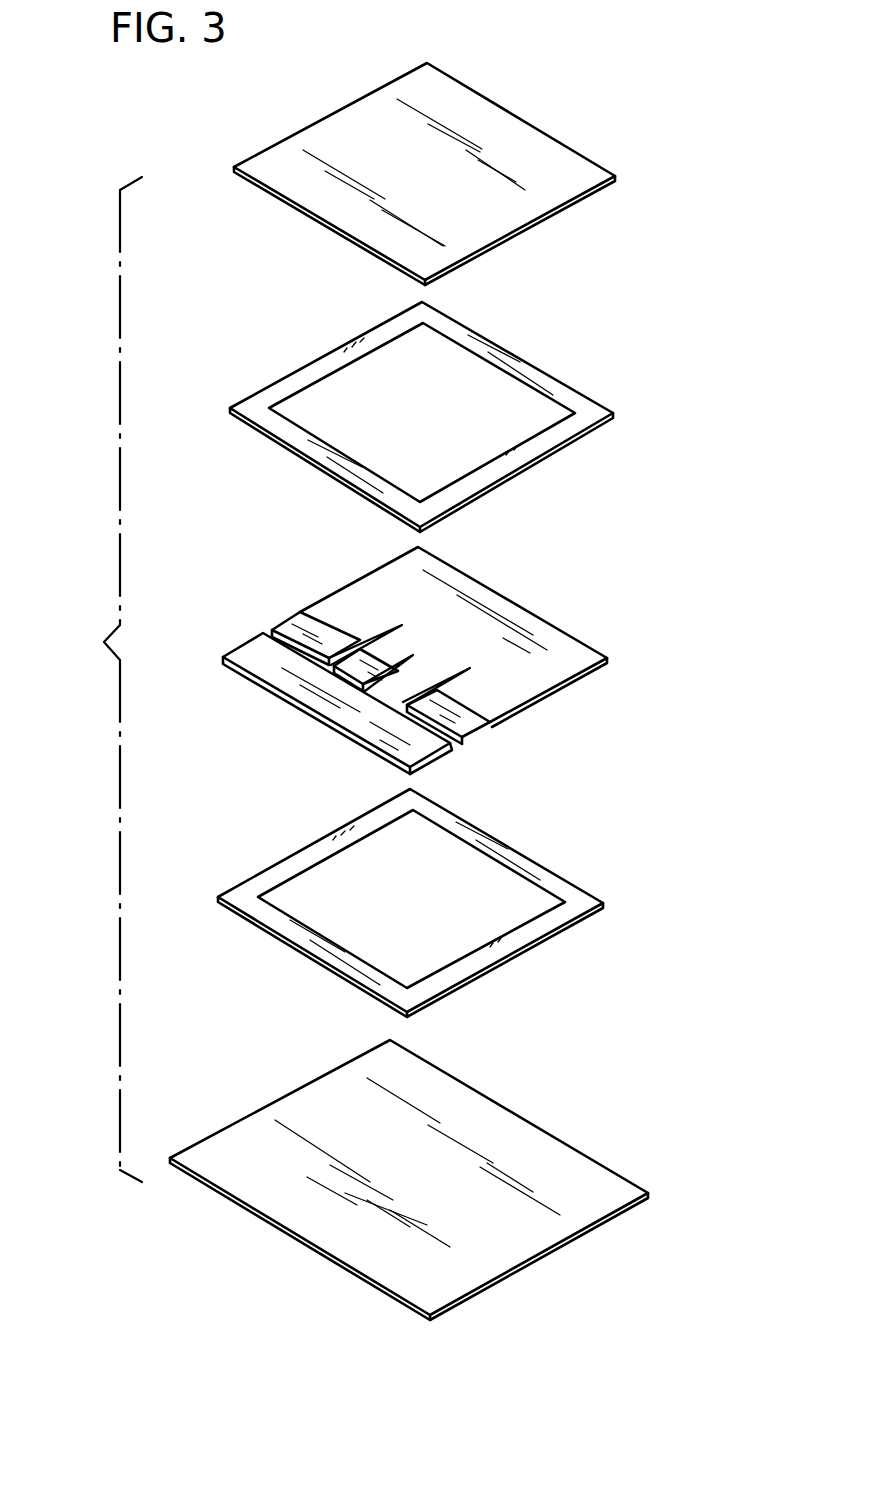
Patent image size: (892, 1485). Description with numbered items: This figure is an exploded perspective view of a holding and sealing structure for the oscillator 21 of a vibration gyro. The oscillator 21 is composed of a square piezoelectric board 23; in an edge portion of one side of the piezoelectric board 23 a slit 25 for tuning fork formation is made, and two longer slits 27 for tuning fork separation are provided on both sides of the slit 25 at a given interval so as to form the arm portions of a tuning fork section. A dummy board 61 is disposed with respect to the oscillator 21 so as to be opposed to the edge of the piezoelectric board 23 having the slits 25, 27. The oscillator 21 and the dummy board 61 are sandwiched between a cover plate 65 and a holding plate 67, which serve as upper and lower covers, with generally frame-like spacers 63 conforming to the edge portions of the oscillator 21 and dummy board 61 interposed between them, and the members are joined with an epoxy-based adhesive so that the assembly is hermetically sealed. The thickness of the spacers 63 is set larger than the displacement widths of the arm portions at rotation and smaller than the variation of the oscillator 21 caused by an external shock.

The oscillator 21 is at (538, 660).
The piezoelectric board 23 is at (390, 602).
The slit for tuning fork formation 25 is at (415, 655).
The slits for tuning fork separation 27 is at (335, 620).
The dummy board 61 is at (337, 696).
The spacers 63 is at (532, 375).
The cover plate 65 is at (540, 172).
The holding plate 67 is at (518, 1165).